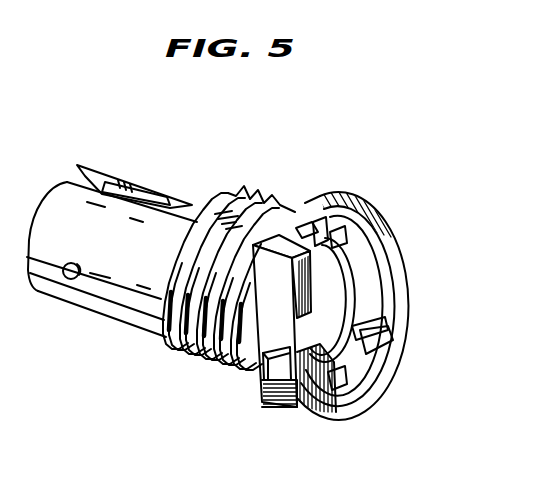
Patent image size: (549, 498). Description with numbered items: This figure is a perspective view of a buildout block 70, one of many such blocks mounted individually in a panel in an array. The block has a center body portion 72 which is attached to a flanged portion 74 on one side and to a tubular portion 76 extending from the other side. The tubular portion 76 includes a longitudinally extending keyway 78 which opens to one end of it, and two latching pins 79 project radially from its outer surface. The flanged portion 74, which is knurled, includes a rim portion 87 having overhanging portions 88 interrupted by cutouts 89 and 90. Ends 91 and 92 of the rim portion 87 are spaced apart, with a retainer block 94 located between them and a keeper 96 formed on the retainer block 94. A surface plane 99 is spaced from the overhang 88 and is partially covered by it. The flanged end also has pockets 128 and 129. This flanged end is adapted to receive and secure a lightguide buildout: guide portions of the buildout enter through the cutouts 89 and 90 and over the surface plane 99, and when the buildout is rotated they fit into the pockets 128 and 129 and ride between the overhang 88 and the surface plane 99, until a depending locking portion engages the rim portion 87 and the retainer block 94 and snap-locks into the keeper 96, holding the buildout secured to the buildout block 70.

The buildout block 70 is at (243, 99).
The center body portion 72 is at (235, 194).
The flanged portion 74 is at (338, 190).
The tubular portion 76 is at (160, 186).
The keyway 78 is at (93, 170).
The latching pin 79 is at (67, 278).
The rim portion 87 is at (350, 194).
The overhanging portion 88 is at (337, 233).
The cutout 89 is at (365, 355).
The cutout 90 is at (320, 291).
The end 91 is at (317, 243).
The end 92 is at (280, 360).
The retainer block 94 is at (284, 246).
The keeper 96 is at (277, 397).
The surface plane 99 is at (270, 320).
The pocket 128 is at (380, 323).
The pocket 129 is at (330, 259).